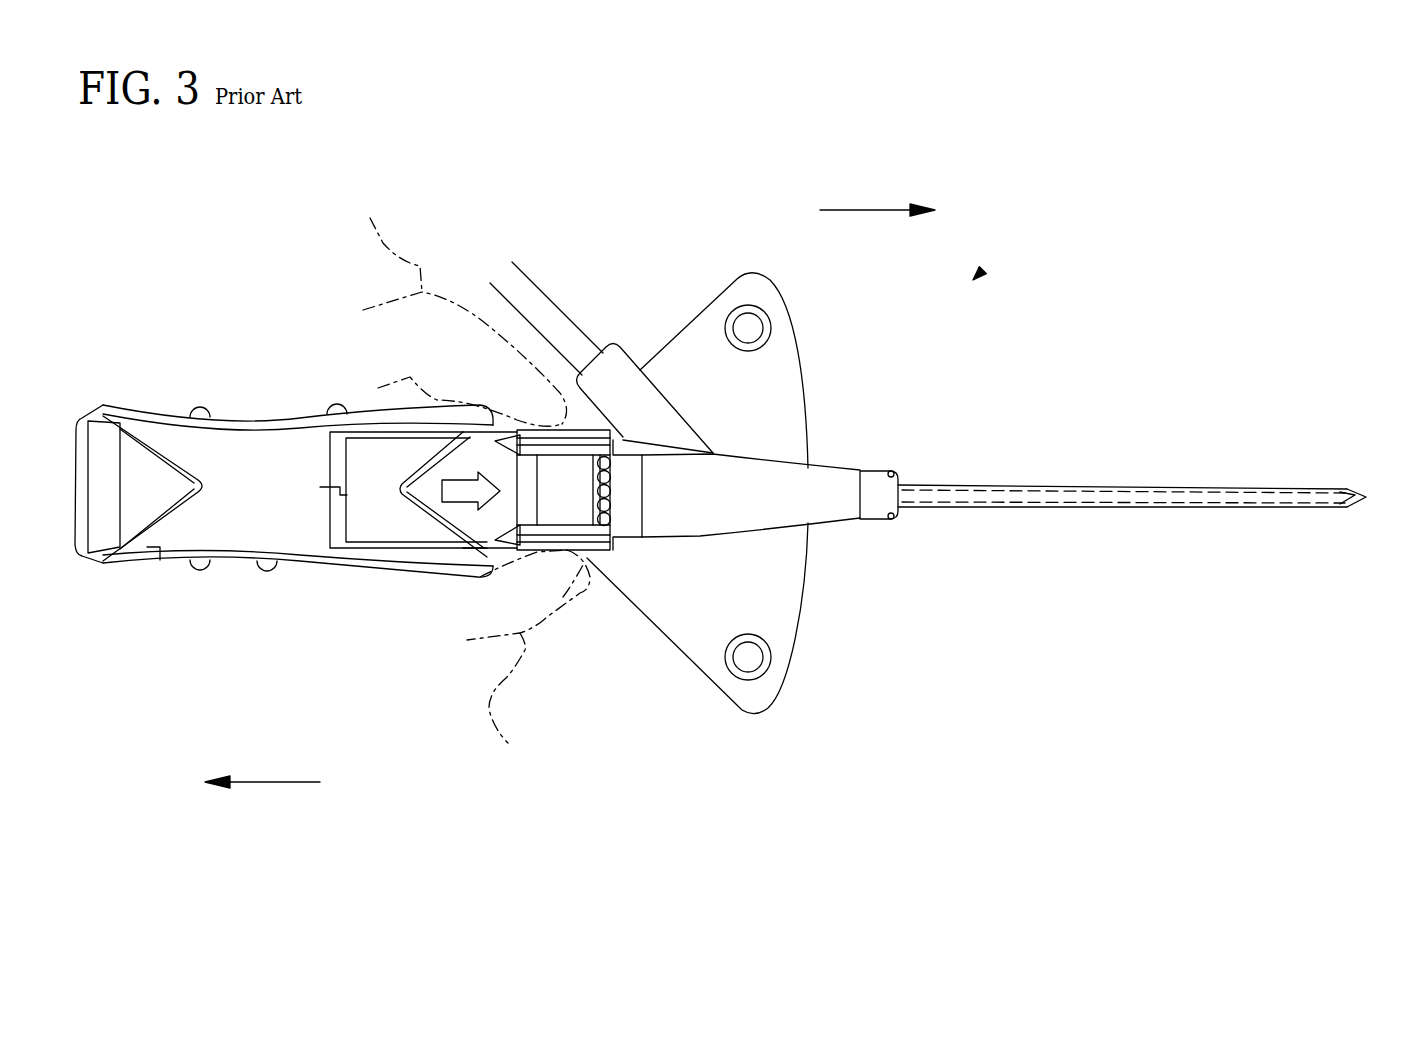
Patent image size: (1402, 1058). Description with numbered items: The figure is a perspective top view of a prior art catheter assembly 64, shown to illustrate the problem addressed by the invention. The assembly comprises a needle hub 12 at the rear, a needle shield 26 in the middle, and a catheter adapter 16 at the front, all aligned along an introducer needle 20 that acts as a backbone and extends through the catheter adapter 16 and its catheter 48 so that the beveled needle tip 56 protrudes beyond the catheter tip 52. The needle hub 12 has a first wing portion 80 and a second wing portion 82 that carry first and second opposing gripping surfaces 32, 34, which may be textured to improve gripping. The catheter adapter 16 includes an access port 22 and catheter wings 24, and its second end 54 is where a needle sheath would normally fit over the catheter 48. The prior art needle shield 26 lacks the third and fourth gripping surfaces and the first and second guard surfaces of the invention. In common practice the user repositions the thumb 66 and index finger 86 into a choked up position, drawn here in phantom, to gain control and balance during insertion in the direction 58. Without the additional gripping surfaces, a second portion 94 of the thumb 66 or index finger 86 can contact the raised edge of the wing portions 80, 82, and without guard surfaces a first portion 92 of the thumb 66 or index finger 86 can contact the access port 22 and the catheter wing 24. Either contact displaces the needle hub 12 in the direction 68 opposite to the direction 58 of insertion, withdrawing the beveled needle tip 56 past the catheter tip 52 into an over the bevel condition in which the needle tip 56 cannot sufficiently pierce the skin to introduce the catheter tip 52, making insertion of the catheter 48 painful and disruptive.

The needle hub 12 is at (284, 487).
The catheter adapter 16 is at (815, 417).
The introducer needle 20 is at (330, 488).
The access port 22 is at (622, 373).
The catheter wings 24 is at (783, 552).
The needle shield 26 is at (380, 528).
The first gripping surface 32 is at (202, 560).
The second gripping surface 34 is at (200, 410).
The catheter 48 is at (1165, 485).
The catheter tip 52 is at (1366, 497).
The second end of the catheter adapter 54 is at (882, 488).
The needle tip 56 is at (1367, 499).
The direction of insertion 58 is at (867, 208).
The prior art catheter assembly 64 is at (980, 273).
The thumb 66 is at (456, 305).
The direction opposite to insertion 68 is at (258, 783).
The first wing portion 80 is at (450, 390).
The second wing portion 82 is at (452, 577).
The index finger 86 is at (505, 705).
The first portion of the thumb or index finger 92 is at (565, 403).
The second portion of the thumb or index finger 94 is at (472, 577).